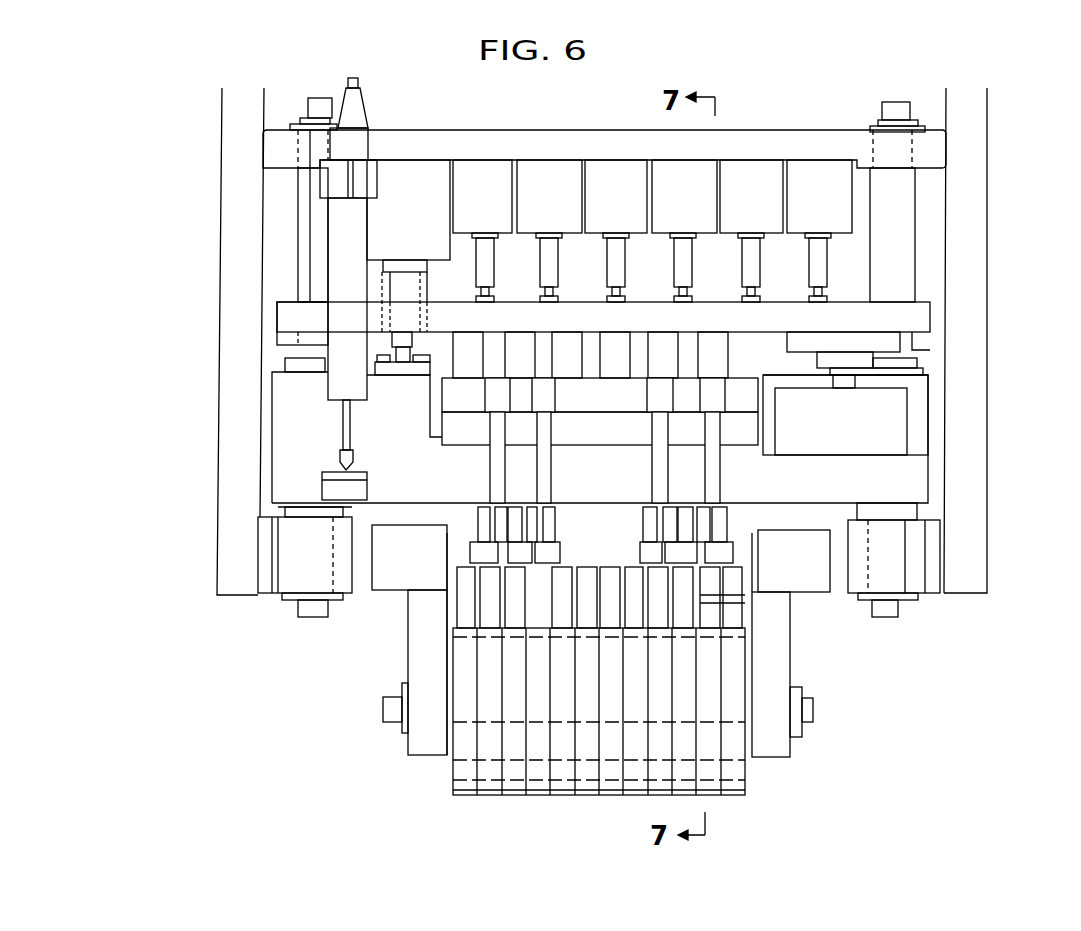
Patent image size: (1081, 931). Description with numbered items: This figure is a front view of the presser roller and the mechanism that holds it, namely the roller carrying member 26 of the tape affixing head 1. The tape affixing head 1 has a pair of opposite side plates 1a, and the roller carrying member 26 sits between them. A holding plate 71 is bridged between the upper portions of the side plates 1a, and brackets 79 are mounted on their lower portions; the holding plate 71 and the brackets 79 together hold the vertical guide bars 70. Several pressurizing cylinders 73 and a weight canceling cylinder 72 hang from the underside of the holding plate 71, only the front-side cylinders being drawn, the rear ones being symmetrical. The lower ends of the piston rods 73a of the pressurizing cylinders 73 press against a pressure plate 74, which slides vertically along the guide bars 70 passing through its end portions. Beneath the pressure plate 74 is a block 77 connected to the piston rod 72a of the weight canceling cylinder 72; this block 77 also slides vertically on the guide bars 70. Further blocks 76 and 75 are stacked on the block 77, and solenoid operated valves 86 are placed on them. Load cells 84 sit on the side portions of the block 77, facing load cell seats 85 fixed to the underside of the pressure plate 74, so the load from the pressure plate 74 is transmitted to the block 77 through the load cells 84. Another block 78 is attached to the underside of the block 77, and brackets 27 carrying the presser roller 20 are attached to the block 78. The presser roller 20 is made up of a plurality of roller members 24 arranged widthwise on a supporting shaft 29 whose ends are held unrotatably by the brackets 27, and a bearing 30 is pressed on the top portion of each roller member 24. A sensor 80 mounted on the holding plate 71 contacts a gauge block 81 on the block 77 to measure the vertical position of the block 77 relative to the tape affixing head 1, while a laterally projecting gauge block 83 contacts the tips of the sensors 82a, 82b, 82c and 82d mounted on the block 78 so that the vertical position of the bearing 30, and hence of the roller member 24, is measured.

The tape affixing head 1 is at (599, 341).
The side plates 1a is at (240, 372).
The presser roller 20 is at (648, 738).
The roller members 24 is at (748, 767).
The roller carrying member 26 is at (895, 84).
The brackets 27 is at (415, 665).
The supporting shaft 29 is at (440, 718).
The bearing 30 is at (735, 602).
The guide bars 70 is at (305, 285).
The holding plate 71 is at (520, 130).
The weight canceling cylinders 72 is at (385, 232).
The piston rods 72a is at (406, 295).
The pressurizing cylinders 73 is at (805, 170).
The piston rods 73a is at (543, 270).
The pressure plate 74 is at (920, 322).
The block 75 is at (770, 400).
The block 76 is at (750, 433).
The block 77 is at (295, 467).
The block 78 is at (812, 518).
The brackets 79 is at (282, 580).
The sensor 80 is at (357, 140).
The gauge block 81 is at (325, 487).
The pin 82a is at (490, 483).
The pin 82b is at (720, 487).
The pin 82c is at (545, 490).
The pin 82d is at (663, 465).
The gauge block 83 is at (490, 598).
The load cells 84 is at (892, 435).
The load cell seats 85 is at (832, 364).
The solenoid operated valves 86 is at (750, 345).